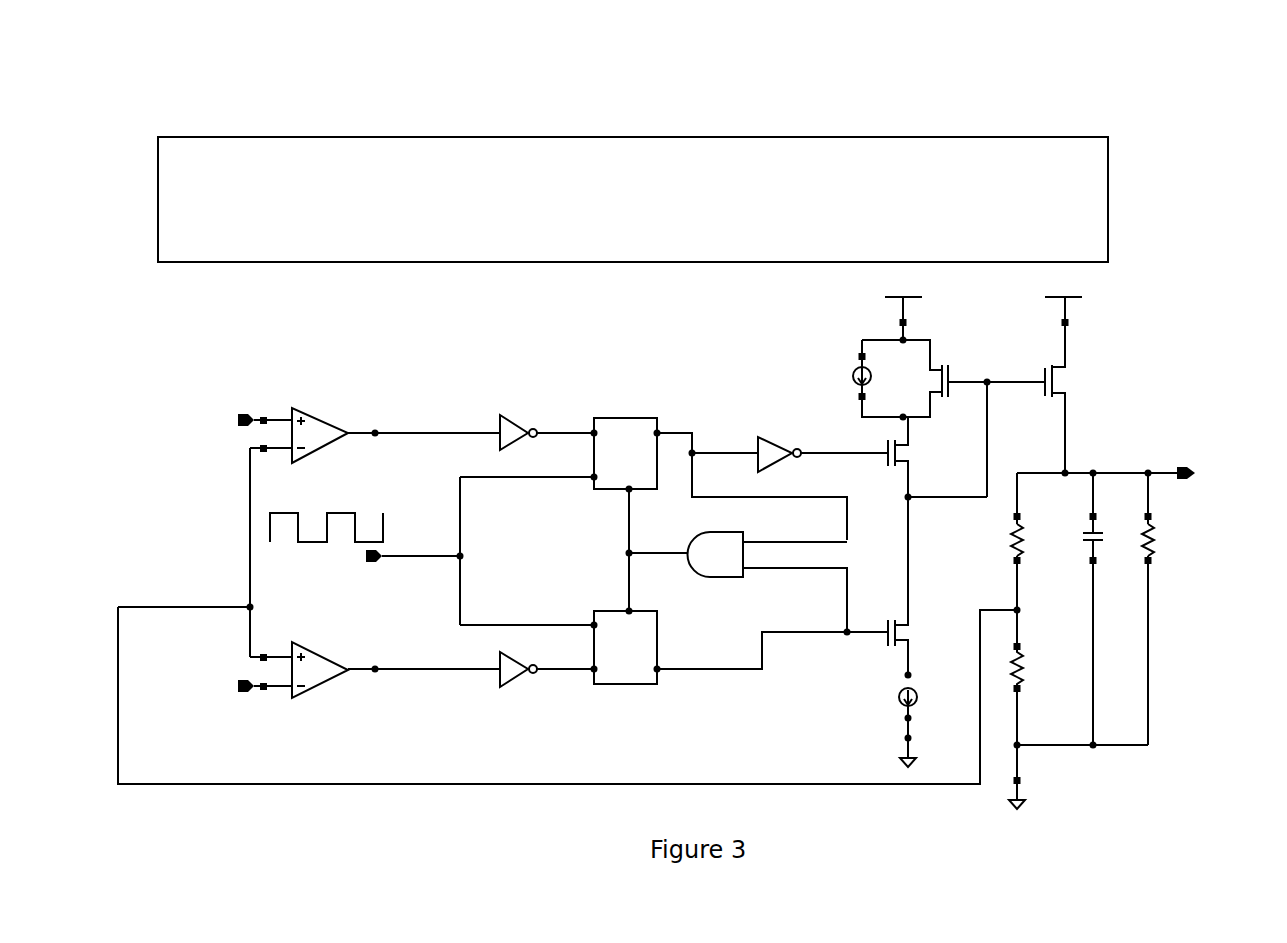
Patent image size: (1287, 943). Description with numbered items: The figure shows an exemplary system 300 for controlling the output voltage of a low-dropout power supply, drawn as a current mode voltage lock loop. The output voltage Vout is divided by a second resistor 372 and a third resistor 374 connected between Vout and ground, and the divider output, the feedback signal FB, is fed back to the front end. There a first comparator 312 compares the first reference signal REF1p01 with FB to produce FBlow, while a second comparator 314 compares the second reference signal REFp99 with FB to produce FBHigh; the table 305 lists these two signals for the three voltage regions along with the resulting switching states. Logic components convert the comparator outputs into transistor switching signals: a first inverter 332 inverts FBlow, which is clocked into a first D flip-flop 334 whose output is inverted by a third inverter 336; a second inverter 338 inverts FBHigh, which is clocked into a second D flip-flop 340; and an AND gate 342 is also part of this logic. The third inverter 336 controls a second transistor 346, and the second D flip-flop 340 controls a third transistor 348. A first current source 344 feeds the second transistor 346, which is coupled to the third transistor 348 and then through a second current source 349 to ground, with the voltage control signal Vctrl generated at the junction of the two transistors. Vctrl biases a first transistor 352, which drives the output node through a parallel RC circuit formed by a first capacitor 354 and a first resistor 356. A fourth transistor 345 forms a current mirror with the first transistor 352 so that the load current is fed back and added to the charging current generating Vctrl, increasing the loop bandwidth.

The exemplary system 300 is at (163, 80).
The table 305 is at (456, 137).
The first comparator 312 is at (322, 455).
The second comparator 314 is at (316, 690).
The first inverter 332 is at (505, 447).
The first D flip-flop 334 is at (595, 418).
The third inverter 336 is at (760, 468).
The second inverter 338 is at (505, 685).
The second D flip-flop 340 is at (595, 611).
The AND gate 342 is at (712, 532).
The first current source 344 is at (858, 364).
The fourth transistor 345 is at (933, 362).
The second transistor 346 is at (912, 440).
The third transistor 348 is at (912, 617).
The second current source 349 is at (900, 688).
The first transistor 352 is at (1063, 366).
The first capacitor 354 is at (1097, 548).
The first resistor 356 is at (1152, 548).
The second resistor 372 is at (1022, 548).
The third resistor 374 is at (1022, 682).